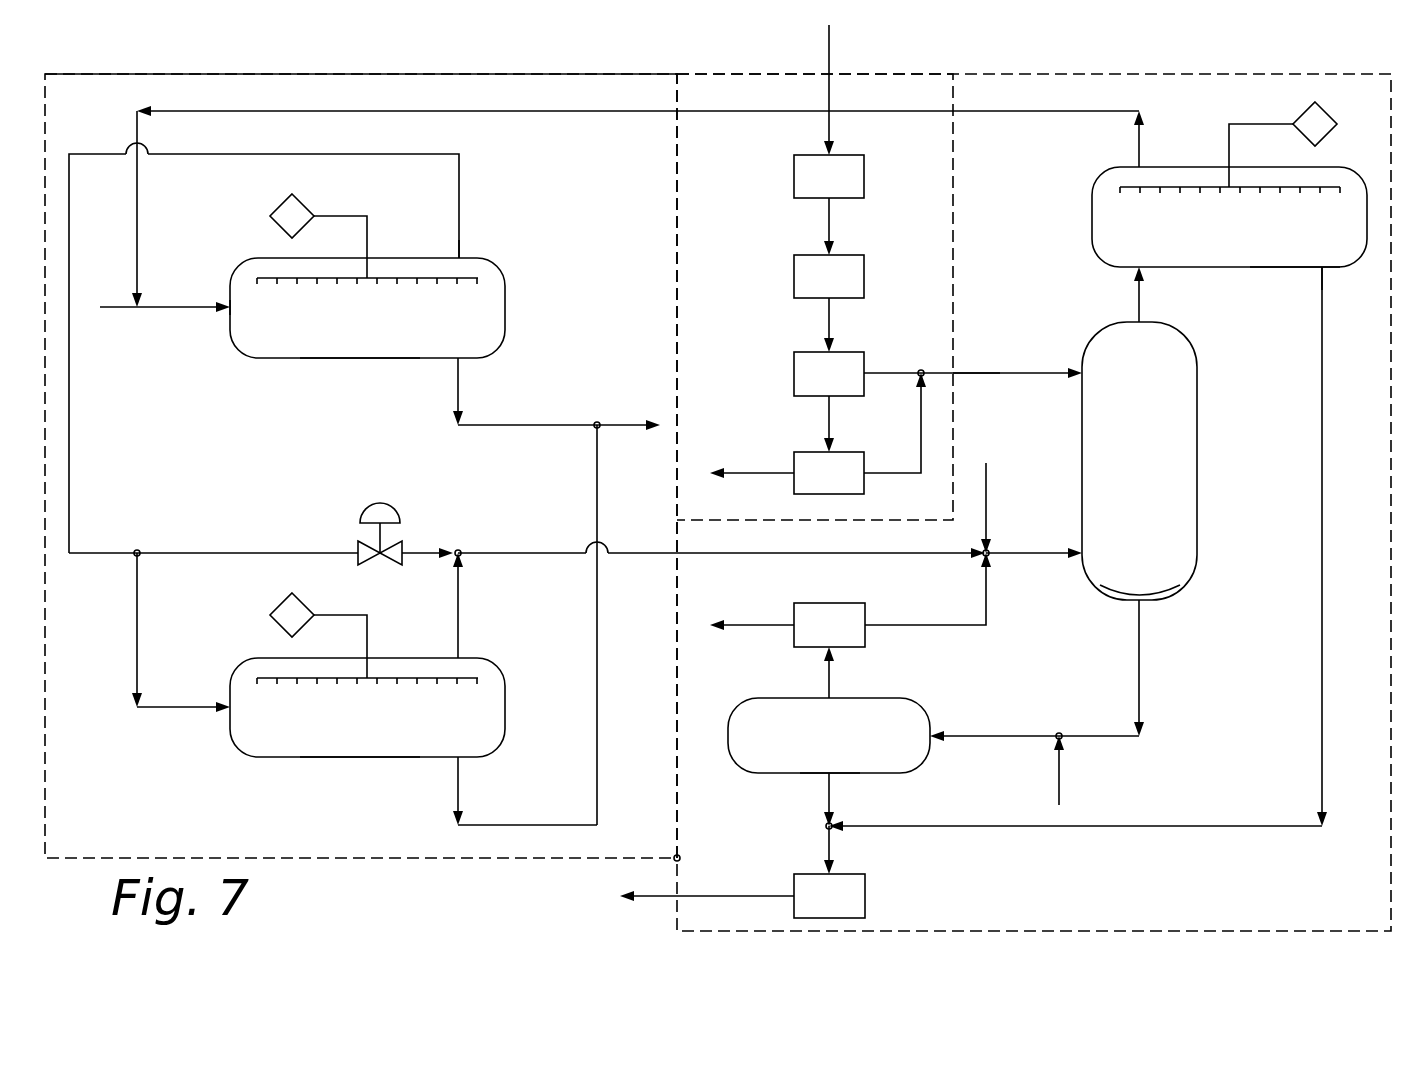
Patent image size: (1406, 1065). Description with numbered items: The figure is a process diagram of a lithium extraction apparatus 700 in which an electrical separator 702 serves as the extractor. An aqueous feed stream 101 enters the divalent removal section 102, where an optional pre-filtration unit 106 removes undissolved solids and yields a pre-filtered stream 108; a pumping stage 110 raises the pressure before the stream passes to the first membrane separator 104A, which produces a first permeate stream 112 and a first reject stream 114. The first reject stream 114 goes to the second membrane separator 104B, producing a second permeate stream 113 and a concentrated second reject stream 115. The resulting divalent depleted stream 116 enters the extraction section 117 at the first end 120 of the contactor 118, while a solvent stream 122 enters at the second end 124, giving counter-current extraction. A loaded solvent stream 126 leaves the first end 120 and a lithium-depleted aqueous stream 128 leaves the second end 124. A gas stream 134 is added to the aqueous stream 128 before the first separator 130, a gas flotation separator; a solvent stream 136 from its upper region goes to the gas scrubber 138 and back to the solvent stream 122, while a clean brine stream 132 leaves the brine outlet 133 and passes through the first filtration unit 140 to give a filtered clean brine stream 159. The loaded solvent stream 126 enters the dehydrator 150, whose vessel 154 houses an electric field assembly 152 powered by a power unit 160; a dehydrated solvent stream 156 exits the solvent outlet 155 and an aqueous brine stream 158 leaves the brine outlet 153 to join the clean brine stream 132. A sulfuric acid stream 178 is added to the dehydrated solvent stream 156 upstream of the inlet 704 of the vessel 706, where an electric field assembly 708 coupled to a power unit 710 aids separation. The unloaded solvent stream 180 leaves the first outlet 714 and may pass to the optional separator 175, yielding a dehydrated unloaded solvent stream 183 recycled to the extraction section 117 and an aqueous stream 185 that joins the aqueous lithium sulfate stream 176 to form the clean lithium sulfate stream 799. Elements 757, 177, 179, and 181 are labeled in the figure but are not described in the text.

The lithium extraction apparatus 700 is at (150, 58).
The system boundary 757 is at (618, 82).
The aqueous feed stream 101 is at (826, 44).
The divalent removal section 102 is at (928, 84).
The extraction section 117 is at (1353, 82).
The pre-filtration unit 106 is at (829, 176).
The pre-filtered stream 108 is at (832, 220).
The pumping stage 110 is at (829, 303).
The first membrane separator 104A is at (829, 374).
The second membrane separator 104B is at (829, 473).
The first permeate stream 112 is at (886, 370).
The second permeate stream 113 is at (890, 470).
The first reject stream 114 is at (827, 418).
The second reject stream 115 is at (768, 474).
The divalent depleted stream 116 is at (1042, 375).
The contactor 118 is at (1139, 461).
The first end 120 is at (1176, 463).
The solvent stream 122 is at (989, 496).
The second end 124 is at (1197, 583).
The loaded solvent stream 126 is at (1137, 304).
The lithium-depleted aqueous stream 128 is at (1142, 665).
The first separator 130 is at (829, 754).
The clean brine stream 132 is at (827, 798).
The brine outlet 133 is at (836, 775).
The gas stream 134 is at (1062, 778).
The solvent stream 136 is at (827, 672).
The gas scrubber 138 is at (850, 600).
The first filtration unit 140 is at (829, 896).
The dehydrator 150 is at (1198, 246).
The electric field assembly 152 is at (1118, 190).
The brine outlet 153 is at (1320, 267).
The vessel 154 is at (1332, 270).
The solvent outlet 155 is at (1142, 165).
The dehydrated solvent stream 156 is at (1062, 124).
The aqueous brine stream 158 is at (1318, 452).
The filtered clean brine stream 159 is at (738, 893).
The power unit 160 is at (1300, 113).
The separator 175 is at (403, 724).
The aqueous lithium sulfate stream 176 is at (455, 391).
The vessel bottom 177 is at (342, 358).
The sulfuric acid stream 178 is at (104, 309).
The demister tray 179 is at (255, 680).
The unloaded solvent stream 180 is at (462, 186).
The level controller 181 is at (278, 605).
The dehydrated unloaded solvent stream 183 is at (462, 608).
The aqueous stream 185 is at (462, 795).
The electrical separator 702 is at (385, 309).
The inlet 704 is at (228, 310).
The vessel 706 is at (506, 303).
The electric field assembly 708 is at (255, 280).
The power unit 710 is at (276, 203).
The first outlet 714 is at (460, 262).
The clean lithium sulfate stream 799 is at (620, 423).